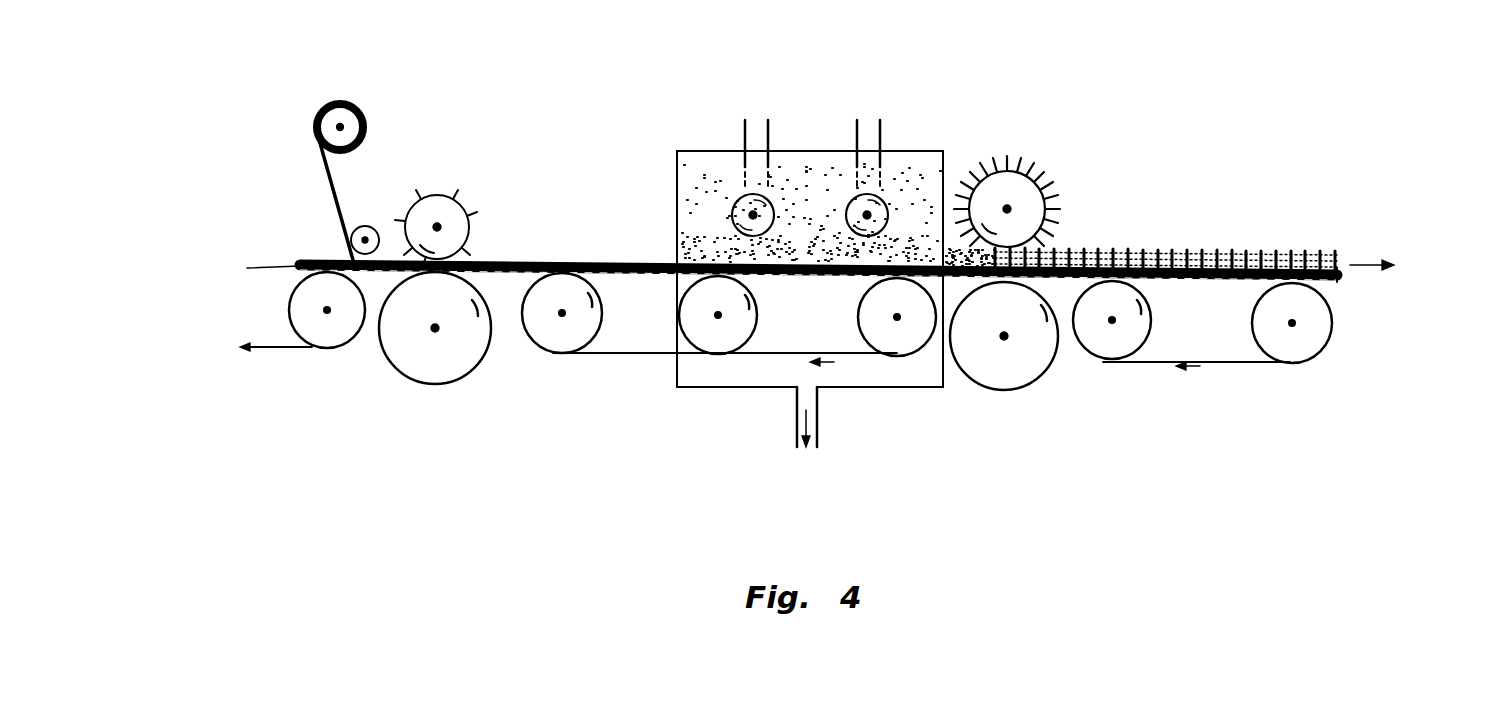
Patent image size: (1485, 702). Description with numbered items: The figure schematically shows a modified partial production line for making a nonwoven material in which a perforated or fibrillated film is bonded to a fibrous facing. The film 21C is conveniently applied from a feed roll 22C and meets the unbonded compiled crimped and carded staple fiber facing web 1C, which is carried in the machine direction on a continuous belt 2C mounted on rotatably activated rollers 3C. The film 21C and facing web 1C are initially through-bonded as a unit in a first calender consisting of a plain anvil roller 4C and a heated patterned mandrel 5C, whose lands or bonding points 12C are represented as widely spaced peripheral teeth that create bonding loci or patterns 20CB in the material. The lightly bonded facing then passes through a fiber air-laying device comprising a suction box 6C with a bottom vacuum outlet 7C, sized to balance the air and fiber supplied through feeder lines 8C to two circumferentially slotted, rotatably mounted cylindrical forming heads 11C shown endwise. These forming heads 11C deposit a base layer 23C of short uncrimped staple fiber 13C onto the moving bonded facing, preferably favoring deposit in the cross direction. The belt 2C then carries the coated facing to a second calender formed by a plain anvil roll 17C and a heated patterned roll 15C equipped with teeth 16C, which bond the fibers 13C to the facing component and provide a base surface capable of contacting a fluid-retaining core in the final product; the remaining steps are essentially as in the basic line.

The compiled facing web 1C is at (302, 260).
The continuous belt 2C is at (780, 355).
The rollers 3C is at (327, 338).
The anvil roller 4C is at (432, 384).
The heated patterned mandrel 5C is at (438, 212).
The suction box 6C is at (947, 163).
The bottom vacuum outlet 7C is at (815, 425).
The feeder lines 8C is at (757, 133).
The forming heads 11C is at (737, 223).
The lands or bonding points 12C is at (475, 233).
The uncrimped staple fiber 13C is at (833, 237).
The heated patterned roll 15C is at (1037, 167).
The teeth 16C is at (1063, 198).
The plain anvil roll 17C is at (1007, 390).
The bonding loci or patterns 20CB is at (1322, 253).
The perforated or fibrillated film 21C is at (323, 172).
The feed roll 22C is at (345, 117).
The base layer 23C is at (1270, 252).